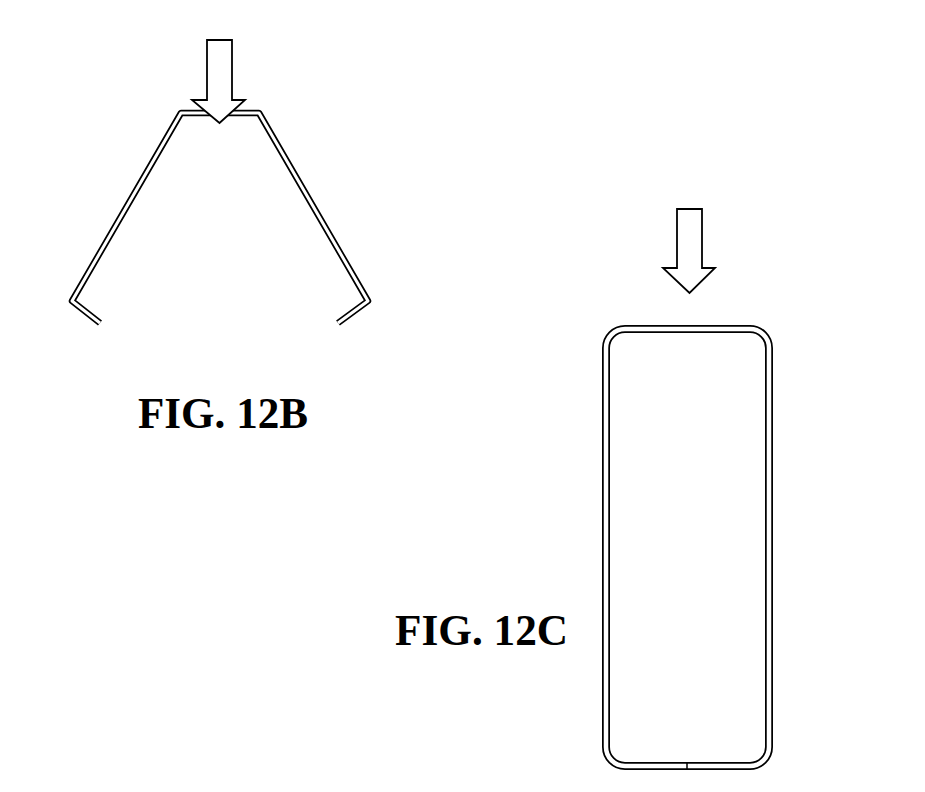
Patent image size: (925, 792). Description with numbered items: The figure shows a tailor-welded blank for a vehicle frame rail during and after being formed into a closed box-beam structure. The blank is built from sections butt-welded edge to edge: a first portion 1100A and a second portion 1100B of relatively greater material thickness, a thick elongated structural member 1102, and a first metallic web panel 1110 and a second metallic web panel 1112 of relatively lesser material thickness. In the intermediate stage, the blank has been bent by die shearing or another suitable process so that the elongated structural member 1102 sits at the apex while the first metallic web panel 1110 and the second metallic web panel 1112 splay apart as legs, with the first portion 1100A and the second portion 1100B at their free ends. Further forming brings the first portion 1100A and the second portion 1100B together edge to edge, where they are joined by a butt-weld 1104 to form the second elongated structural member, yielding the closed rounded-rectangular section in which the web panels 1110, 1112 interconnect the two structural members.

In FIG. 12B, the first portion of elongated structural member 1100A is at (111, 216).
In FIG. 12C, the first portion of elongated structural member 1100A is at (591, 536).
In FIG. 12B, the second portion of elongated structural member 1100B is at (319, 216).
In FIG. 12C, the second portion of elongated structural member 1100B is at (773, 547).
In FIG. 12B, the elongated structural member 1102 is at (286, 310).
In FIG. 12C, the elongated structural member 1102 is at (726, 770).
In FIG. 12C, the butt-weld 1104 is at (715, 326).
In FIG. 12B, the first metallic web panel 1110 is at (105, 240).
In FIG. 12C, the first metallic web panel 1110 is at (601, 477).
In FIG. 12B, the second metallic web panel 1112 is at (323, 217).
In FIG. 12C, the second metallic web panel 1112 is at (773, 502).